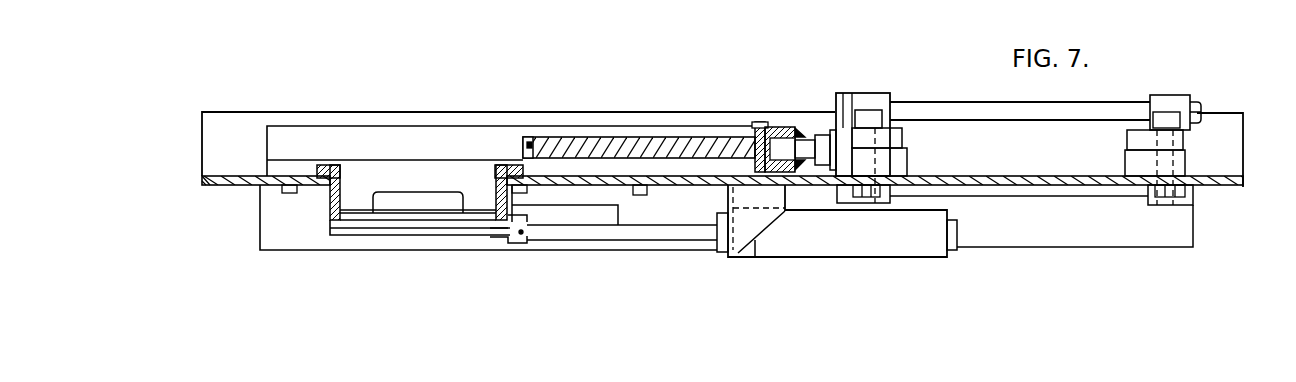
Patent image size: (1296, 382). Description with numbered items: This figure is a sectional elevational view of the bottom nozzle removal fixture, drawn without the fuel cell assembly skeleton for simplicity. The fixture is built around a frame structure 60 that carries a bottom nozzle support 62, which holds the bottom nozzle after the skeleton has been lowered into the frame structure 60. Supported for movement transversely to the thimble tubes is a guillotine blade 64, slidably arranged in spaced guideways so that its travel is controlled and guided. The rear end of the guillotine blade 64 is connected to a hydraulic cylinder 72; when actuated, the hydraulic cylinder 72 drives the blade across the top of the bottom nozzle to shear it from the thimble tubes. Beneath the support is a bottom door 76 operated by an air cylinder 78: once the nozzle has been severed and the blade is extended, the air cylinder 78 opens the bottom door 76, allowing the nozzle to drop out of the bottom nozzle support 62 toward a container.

The frame structure 60 is at (461, 110).
The bottom nozzle support 62 is at (333, 199).
The guillotine blade 64 is at (665, 138).
The hydraulic cylinder 72 is at (930, 108).
The bottom door 76 is at (427, 229).
The air cylinder 78 is at (892, 246).